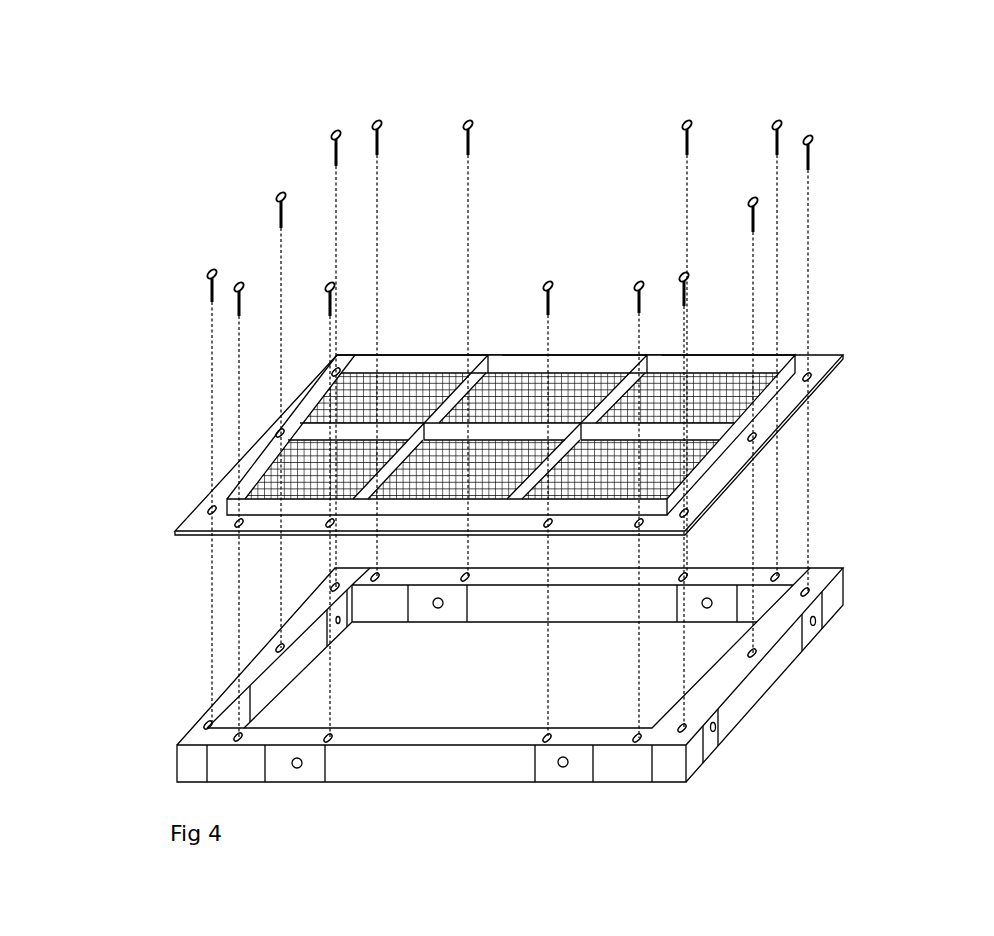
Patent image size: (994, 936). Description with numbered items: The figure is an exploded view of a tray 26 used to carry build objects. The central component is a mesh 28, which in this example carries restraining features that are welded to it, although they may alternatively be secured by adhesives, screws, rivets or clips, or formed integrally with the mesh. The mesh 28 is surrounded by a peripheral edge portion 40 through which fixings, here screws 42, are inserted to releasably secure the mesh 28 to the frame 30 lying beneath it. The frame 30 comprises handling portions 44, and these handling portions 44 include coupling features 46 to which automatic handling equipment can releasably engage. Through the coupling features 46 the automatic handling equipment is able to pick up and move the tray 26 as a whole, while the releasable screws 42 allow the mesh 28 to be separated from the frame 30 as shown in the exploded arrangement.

The tray 26 is at (198, 196).
The mesh 28 is at (567, 390).
The frame 30 is at (192, 768).
The peripheral edge portion 40 is at (818, 365).
The screws 42 is at (466, 121).
The handling portions 44 is at (814, 643).
The coupling features 46 is at (815, 627).